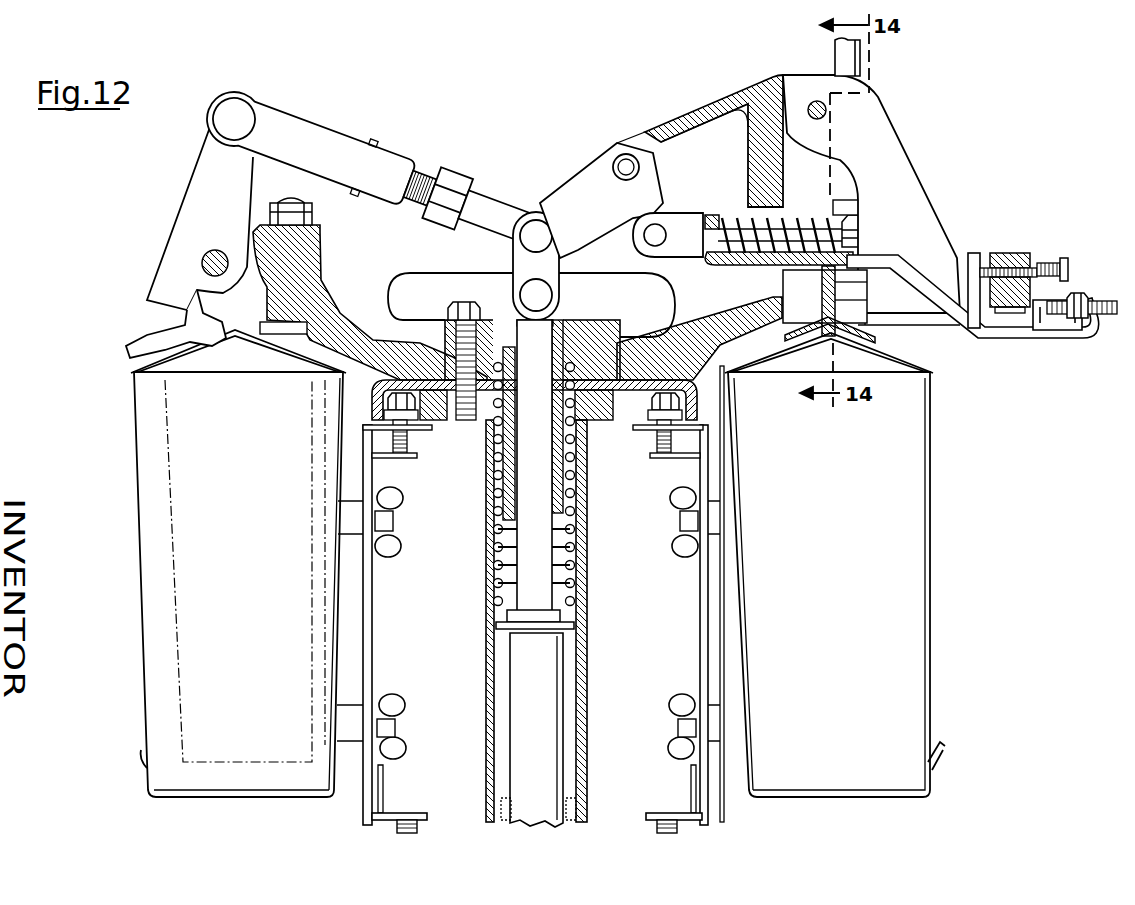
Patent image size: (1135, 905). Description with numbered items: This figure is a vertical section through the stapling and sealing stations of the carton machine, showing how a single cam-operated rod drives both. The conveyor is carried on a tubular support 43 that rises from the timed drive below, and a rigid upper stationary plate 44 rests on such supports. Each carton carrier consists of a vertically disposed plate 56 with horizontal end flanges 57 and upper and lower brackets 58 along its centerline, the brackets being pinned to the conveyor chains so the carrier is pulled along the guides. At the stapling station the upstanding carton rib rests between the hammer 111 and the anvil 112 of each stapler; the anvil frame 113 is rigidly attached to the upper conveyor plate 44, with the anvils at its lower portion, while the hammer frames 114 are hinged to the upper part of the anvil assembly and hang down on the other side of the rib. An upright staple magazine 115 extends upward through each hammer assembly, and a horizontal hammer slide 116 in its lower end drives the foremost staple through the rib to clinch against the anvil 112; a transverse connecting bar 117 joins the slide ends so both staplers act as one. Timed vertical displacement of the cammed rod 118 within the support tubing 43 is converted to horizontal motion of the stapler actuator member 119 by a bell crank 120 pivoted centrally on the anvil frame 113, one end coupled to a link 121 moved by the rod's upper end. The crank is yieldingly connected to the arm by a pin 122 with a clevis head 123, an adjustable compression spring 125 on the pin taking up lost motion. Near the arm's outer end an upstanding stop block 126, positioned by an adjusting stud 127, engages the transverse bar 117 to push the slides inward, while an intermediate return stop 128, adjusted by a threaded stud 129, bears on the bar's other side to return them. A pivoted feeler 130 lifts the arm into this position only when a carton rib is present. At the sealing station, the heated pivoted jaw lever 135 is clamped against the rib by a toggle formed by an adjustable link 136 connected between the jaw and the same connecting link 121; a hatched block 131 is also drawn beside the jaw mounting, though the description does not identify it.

The tubular support 43 is at (590, 634).
The upper stationary plate 44 is at (628, 395).
The carrier plate 56 is at (375, 620).
The horizontal end flange 57 is at (430, 436).
The bracket 58 is at (402, 459).
The hammer 111 is at (833, 312).
The anvil 112 is at (819, 316).
The anvil frame 113 is at (718, 108).
The hammer frame 114 is at (884, 113).
The staple magazine 115 is at (847, 63).
The hammer slide 116 is at (962, 287).
The transverse connecting bar 117 is at (1007, 264).
The cammed rod 118 is at (548, 697).
The stapler actuator member 119 is at (726, 272).
The bell crank 120 is at (626, 210).
The link 121 is at (548, 268).
The pin 122 is at (729, 215).
The clevis head 123 is at (680, 224).
The compression spring 125 is at (792, 220).
The stop block 126 is at (1040, 320).
The adjusting stud 127 is at (1060, 296).
The return stop 128 is at (978, 302).
The threaded stud 129 is at (1050, 273).
The feeler 130 is at (835, 280).
The block 131 is at (258, 303).
The pivoted jaw lever 135 is at (167, 322).
The adjustable link 136 is at (341, 142).